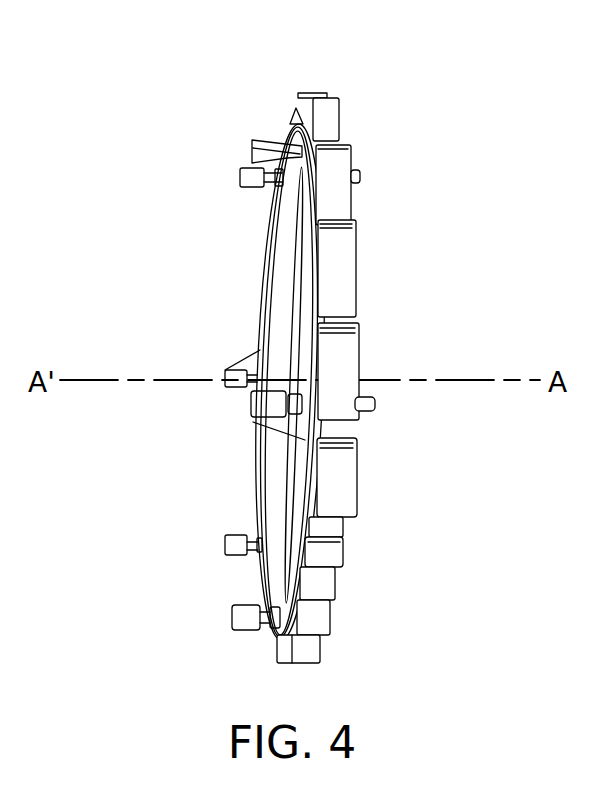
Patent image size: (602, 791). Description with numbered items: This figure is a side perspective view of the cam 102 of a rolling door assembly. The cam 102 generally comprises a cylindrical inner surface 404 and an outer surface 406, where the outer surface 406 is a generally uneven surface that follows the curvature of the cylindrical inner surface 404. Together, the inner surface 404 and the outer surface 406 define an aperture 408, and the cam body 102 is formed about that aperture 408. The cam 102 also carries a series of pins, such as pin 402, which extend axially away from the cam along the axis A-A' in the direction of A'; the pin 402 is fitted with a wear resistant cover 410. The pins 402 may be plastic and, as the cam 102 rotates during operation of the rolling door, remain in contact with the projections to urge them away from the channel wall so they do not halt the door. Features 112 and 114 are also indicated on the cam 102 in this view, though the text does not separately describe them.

The cam 102 is at (319, 349).
The housing segment 112 is at (337, 552).
The housing segment 114 is at (328, 526).
The pin 402 is at (270, 407).
The cylindrical inner surface 404 is at (282, 283).
The outer surface 406 is at (352, 270).
The aperture 408 is at (295, 357).
The wear resistant cover 410 is at (270, 434).